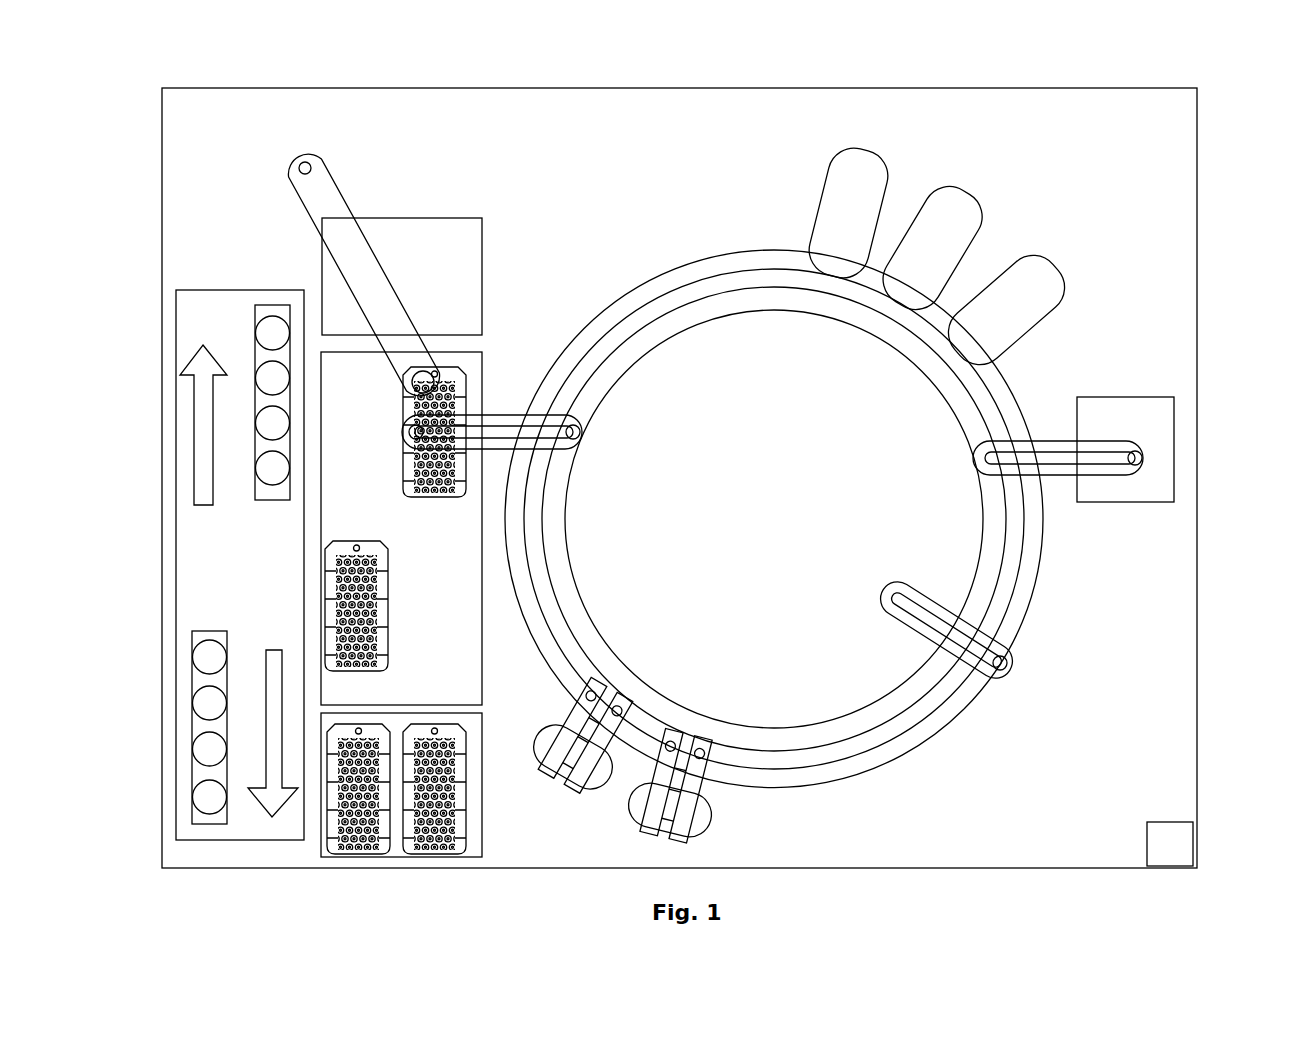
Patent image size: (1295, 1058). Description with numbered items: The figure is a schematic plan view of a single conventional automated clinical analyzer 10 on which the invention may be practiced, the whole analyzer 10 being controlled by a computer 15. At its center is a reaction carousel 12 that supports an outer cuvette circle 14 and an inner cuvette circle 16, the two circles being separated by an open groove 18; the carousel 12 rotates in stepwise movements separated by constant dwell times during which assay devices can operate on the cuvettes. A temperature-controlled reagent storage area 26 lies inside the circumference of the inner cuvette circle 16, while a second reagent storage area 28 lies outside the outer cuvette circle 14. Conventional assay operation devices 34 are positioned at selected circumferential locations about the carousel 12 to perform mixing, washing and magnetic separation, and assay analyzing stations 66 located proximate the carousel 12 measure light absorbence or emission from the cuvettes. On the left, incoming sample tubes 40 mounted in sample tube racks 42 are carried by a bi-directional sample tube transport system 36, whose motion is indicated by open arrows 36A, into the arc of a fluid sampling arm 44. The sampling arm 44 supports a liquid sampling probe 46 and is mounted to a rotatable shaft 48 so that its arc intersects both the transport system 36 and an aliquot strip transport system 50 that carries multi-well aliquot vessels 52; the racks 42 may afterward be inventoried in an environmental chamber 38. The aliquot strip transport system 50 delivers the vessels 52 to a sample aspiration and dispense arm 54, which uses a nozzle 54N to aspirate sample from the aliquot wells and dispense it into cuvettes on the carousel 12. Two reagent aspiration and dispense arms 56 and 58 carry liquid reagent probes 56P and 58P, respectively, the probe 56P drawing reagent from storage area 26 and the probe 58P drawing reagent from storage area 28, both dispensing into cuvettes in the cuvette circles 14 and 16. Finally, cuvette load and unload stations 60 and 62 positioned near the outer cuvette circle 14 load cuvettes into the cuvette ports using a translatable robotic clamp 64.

The automatic chemical analyzer 10 is at (158, 104).
The reaction carousel 12 is at (661, 265).
The outer cuvette circle 14 is at (729, 262).
The computer 15 is at (1170, 844).
The inner cuvette circle 16 is at (777, 300).
The open groove 18 is at (652, 312).
The reagent storage area 26 is at (783, 569).
The reagent storage area 28 is at (1119, 396).
The assay operation devices 34 is at (1032, 618).
The sample tube transport system 36 is at (174, 688).
The open arrows 36A is at (198, 448).
The environmental chamber 38 is at (392, 217).
The sample tubes 40 is at (210, 660).
The sample tube racks 42 is at (216, 827).
The sampling arm 44 is at (351, 208).
The liquid sampling probe 46 is at (423, 371).
The rotatable shaft 48 is at (310, 160).
The aliquot strip transport system 50 is at (355, 347).
The aliquot vessels 52 is at (463, 361).
The sample aspiration and dispense arm 54 is at (562, 412).
The nozzle 54N is at (581, 441).
The reagent aspiration and dispense arm 56 is at (886, 605).
The liquid reagent probe 56P is at (1004, 671).
The reagent aspiration and dispense arm 58 is at (1060, 440).
The liquid reagent probe 58P is at (1141, 448).
The cuvette load and unload station 60 is at (581, 784).
The cuvette load and unload station 62 is at (662, 838).
The translatable robotic clamp 64 is at (620, 728).
The assay analyzing stations 66 is at (893, 171).